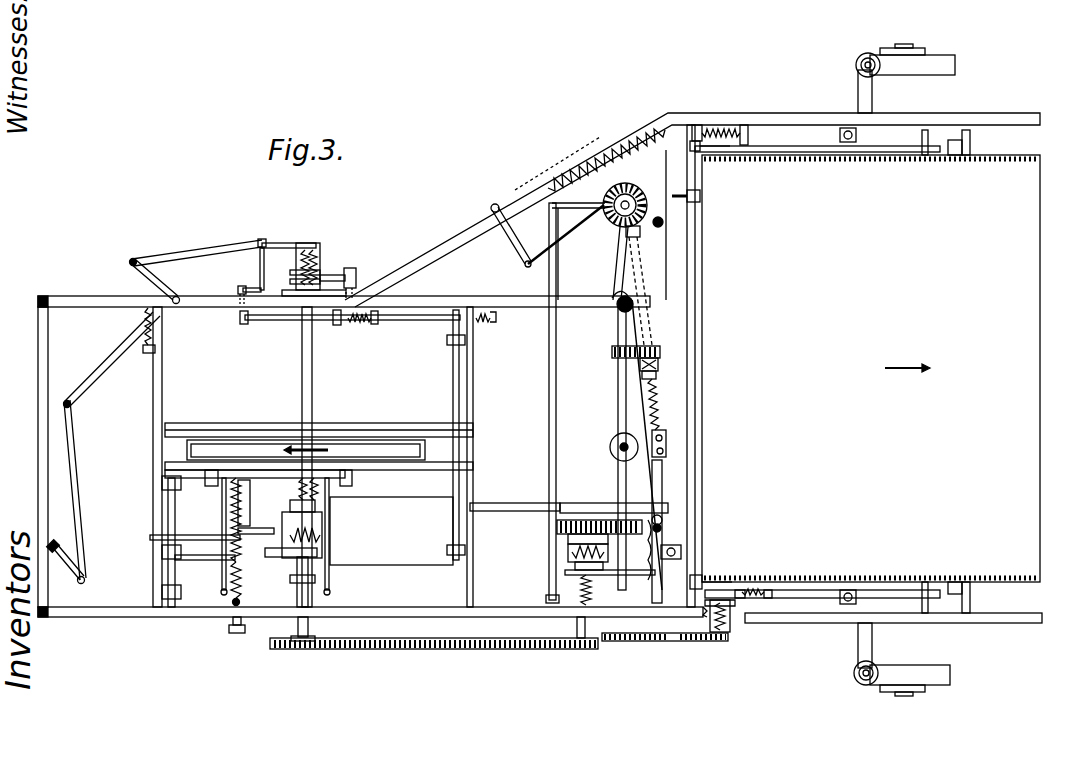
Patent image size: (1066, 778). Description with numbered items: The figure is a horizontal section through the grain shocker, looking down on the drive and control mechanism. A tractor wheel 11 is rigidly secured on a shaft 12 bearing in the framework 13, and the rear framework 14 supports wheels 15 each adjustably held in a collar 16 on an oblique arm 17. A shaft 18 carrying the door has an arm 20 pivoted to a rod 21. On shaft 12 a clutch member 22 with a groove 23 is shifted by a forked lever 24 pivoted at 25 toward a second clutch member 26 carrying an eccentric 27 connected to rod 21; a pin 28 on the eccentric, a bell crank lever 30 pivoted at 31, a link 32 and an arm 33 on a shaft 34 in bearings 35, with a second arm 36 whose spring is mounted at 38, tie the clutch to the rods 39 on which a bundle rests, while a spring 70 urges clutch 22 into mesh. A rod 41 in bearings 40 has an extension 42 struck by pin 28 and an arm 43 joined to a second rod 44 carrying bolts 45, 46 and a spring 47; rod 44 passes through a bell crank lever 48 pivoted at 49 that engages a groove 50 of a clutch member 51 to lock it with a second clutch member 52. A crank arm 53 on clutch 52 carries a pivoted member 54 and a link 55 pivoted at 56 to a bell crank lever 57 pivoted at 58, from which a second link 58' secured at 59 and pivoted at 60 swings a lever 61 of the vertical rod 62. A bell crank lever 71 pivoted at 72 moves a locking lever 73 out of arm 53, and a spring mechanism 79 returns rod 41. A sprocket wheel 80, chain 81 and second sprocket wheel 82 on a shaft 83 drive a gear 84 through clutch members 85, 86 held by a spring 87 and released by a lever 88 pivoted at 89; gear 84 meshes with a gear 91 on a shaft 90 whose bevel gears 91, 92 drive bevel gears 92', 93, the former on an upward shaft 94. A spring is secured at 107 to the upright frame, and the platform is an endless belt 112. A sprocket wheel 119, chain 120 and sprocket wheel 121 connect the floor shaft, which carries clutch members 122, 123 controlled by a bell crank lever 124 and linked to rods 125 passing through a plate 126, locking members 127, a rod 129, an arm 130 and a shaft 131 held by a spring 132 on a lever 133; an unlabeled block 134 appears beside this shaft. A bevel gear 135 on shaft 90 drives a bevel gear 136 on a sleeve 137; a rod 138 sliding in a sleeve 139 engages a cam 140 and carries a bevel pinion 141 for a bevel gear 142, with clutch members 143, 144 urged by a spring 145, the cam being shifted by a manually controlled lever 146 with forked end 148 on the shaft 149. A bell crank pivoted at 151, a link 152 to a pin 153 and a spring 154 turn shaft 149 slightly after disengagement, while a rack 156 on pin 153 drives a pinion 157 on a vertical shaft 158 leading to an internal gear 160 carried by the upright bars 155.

The tractor wheel 11 is at (375, 430).
The shaft 12 is at (312, 395).
The framework of the shocker 13 is at (250, 617).
The framework 14 is at (820, 127).
The wheels 15 is at (940, 72).
The collar 16 is at (862, 676).
The arm 17 is at (890, 692).
The shaft 18 is at (175, 517).
The arm 20 is at (168, 557).
The rod 21 is at (222, 560).
The clutch member 22 is at (322, 525).
The groove 23 is at (322, 512).
The forked lever 24 is at (295, 502).
The pivot 25 is at (150, 537).
The second clutch member 26 is at (322, 548).
The eccentric 27 is at (296, 567).
The pin 28 is at (272, 547).
The bell crank lever 30 is at (256, 524).
The pivot 31 is at (232, 515).
The link 32 is at (258, 503).
The arm 33 is at (298, 482).
The shaft 34 is at (248, 478).
The bearings 35 is at (212, 470).
The second arm 36 is at (226, 480).
The spring mounting 38 is at (240, 600).
The rods 39 is at (221, 593).
The bearings 40 is at (447, 340).
The rod 41 is at (453, 395).
The extension 42 is at (392, 565).
The arm 43 is at (465, 322).
The second rod 44 is at (400, 320).
The bolt 45 is at (337, 325).
The bolt 46 is at (380, 322).
The spring 47 is at (364, 325).
The bell crank lever 48 is at (335, 275).
The pivot 49 is at (352, 268).
The groove 50 is at (290, 272).
The clutch member 51 is at (290, 282).
The second clutch member 52 is at (314, 243).
The arm 53 is at (292, 243).
The pivoted member 54 is at (264, 238).
The link 55 is at (212, 247).
The pivot 56 is at (130, 262).
The bell crank lever 57 is at (162, 285).
The pivot 58 is at (170, 325).
The second link 58' is at (89, 490).
The connection point 59 is at (70, 404).
The pivot 60 is at (85, 582).
The lever 61 is at (66, 572).
The vertical rod 62 is at (56, 542).
The spring 70 is at (330, 493).
The bell crank lever 71 is at (250, 288).
The pivot 72 is at (238, 290).
The locking lever 73 is at (260, 258).
The spring mechanism 79 is at (483, 325).
The sprocket wheel 80 is at (305, 650).
The chain 81 is at (440, 650).
The second sprocket wheel 82 is at (593, 650).
The shaft 83 is at (577, 630).
The gear 84 is at (580, 520).
The clutch member 85 is at (568, 540).
The second clutch member 86 is at (568, 555).
The spring 87 is at (592, 588).
The lever 88 is at (648, 555).
The pivot 89 is at (652, 575).
The shaft 90 is at (618, 475).
The gear 91 is at (616, 437).
The bevel gear 92 is at (607, 448).
The bevel gear 92' is at (597, 448).
The bevel gear 93 is at (620, 298).
The shaft 94 is at (620, 447).
The spring attachment 107 is at (612, 306).
The endless belt 112 is at (871, 368).
The sprocket wheel 119 is at (722, 641).
The chain 120 is at (655, 641).
The sprocket wheel 121 is at (618, 641).
The clutch member 122 is at (730, 630).
The second clutch member 123 is at (735, 603).
The bell crank lever 124 is at (818, 598).
The rods 125 is at (960, 370).
The plate 126 is at (970, 148).
The locking member 127 is at (925, 130).
The rod 129 is at (893, 140).
The arm 130 is at (690, 146).
The shaft 131 is at (695, 490).
The spring 132 is at (744, 125).
The lever 133 is at (698, 125).
The block 134 is at (684, 188).
The bevel gear 135 is at (612, 351).
The bevel gear 136 is at (660, 348).
The sleeve 137 is at (648, 330).
The rod 138 is at (660, 412).
The sleeve 139 is at (666, 444).
The cam 140 is at (625, 198).
The bevel pinion 141 is at (641, 234).
The bevel gear 142 is at (616, 228).
The clutch member 143 is at (663, 360).
The second clutch member 144 is at (665, 372).
The spring 145 is at (668, 404).
The manually controlled lever 146 is at (556, 400).
The forked end 148 is at (605, 203).
The shaft 149 is at (695, 216).
The pivot 151 is at (497, 204).
The link 152 is at (565, 243).
The pin 153 is at (566, 233).
The spring 154 is at (660, 152).
The bars 155 is at (681, 552).
The rack 156 is at (640, 480).
The pinion 157 is at (662, 528).
The vertical shaft 158 is at (660, 520).
The internal gear 160 is at (512, 243).